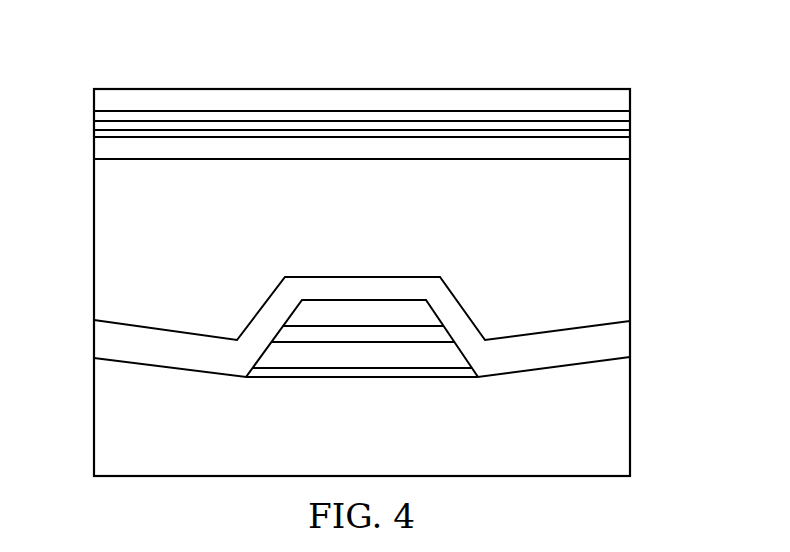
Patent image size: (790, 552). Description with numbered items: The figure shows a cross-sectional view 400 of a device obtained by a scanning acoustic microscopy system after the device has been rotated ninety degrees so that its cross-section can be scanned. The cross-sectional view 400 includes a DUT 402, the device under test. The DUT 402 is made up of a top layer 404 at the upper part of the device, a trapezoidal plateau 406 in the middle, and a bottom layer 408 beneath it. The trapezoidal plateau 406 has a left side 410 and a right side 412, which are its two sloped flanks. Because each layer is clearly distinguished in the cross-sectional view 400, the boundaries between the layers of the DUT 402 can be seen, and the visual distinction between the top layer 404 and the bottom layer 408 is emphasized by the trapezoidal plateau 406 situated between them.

The cross-sectional view 400 is at (475, 68).
The DUT 402 is at (87, 88).
The top layer 404 is at (632, 116).
The trapezoidal plateau 406 is at (364, 286).
The bottom layer 408 is at (384, 442).
The left side 410 is at (270, 309).
The right side 412 is at (455, 309).